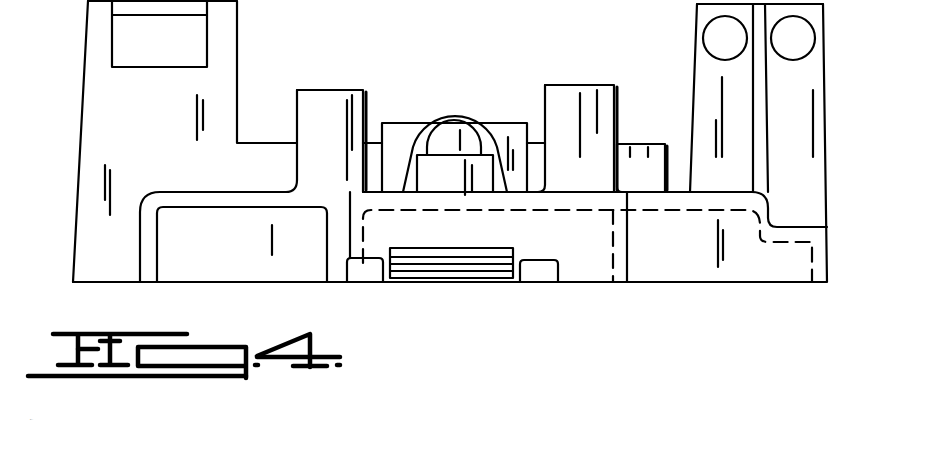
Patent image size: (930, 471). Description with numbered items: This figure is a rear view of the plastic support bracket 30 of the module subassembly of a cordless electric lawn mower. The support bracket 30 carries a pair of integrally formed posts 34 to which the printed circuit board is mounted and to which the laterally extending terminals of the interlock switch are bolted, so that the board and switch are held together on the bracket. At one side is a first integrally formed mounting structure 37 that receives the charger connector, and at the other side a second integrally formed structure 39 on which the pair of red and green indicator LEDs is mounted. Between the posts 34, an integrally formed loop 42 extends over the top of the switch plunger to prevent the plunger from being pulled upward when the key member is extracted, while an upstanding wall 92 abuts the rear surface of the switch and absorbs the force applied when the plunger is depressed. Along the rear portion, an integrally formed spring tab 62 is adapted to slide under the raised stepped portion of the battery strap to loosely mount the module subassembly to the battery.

The support bracket 30 is at (657, 287).
The first integrally formed mounting structure 37 is at (104, 113).
The posts 34 is at (332, 110).
The loop 42 is at (472, 112).
The upstanding wall 92 is at (437, 167).
The second integrally formed structure 39 is at (806, 127).
The spring tab 62 is at (470, 257).